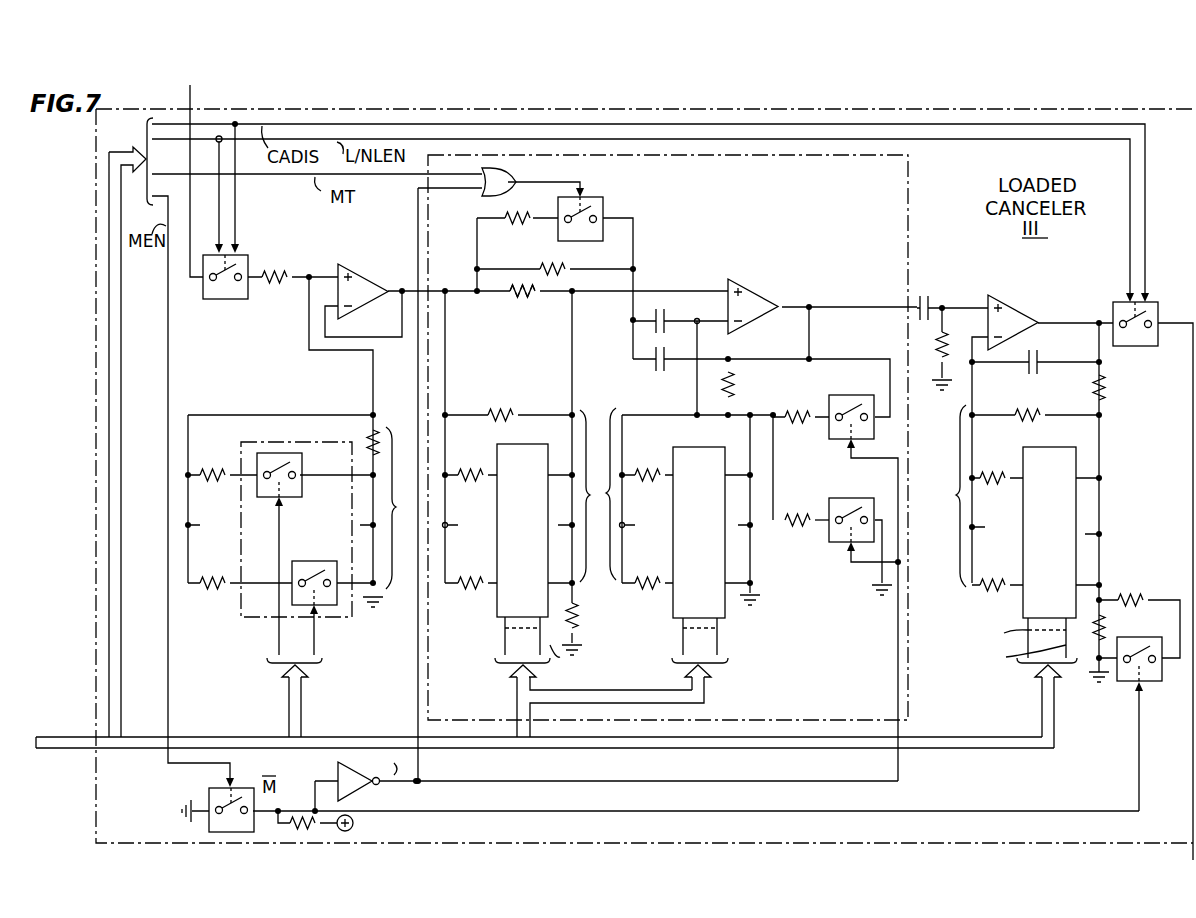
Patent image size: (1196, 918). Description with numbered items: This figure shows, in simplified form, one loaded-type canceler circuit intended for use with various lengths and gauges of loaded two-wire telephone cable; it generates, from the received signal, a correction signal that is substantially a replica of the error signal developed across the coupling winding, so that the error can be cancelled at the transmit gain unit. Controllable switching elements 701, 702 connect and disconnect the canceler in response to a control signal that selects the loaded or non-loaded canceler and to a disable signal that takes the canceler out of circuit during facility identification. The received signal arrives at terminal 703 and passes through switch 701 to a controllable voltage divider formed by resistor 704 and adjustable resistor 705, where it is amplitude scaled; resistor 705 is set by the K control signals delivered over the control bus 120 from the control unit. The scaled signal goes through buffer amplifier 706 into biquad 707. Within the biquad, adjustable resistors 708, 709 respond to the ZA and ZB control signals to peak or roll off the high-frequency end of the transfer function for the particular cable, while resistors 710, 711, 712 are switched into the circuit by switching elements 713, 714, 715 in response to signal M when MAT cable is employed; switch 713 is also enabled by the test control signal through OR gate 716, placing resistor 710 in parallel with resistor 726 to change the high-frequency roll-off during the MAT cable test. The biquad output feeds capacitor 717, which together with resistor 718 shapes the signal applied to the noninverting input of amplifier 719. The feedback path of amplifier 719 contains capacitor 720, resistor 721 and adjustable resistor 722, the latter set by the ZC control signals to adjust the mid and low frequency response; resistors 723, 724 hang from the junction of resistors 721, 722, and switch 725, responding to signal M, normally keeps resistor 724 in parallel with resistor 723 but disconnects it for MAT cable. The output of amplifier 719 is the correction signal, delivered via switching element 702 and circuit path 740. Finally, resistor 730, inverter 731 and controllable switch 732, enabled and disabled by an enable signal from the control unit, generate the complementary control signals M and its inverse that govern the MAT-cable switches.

The control bus 120 is at (58, 735).
The controllable switching element 701 is at (226, 300).
The controllable switching element 702 is at (1150, 304).
The terminal 703 is at (192, 98).
The resistor 704 is at (281, 270).
The controllably adjustable resistor 705 is at (397, 475).
The buffer amplifier 706 is at (368, 267).
The biquad 707 is at (908, 180).
The adjustable resistor ZA 708 is at (577, 457).
The adjustable resistor ZB 709 is at (603, 527).
The resistor 710 is at (525, 228).
The resistor 711 is at (800, 512).
The resistor 712 is at (802, 426).
The switching element 713 is at (604, 204).
The switching element 714 is at (836, 543).
The switching element 715 is at (848, 395).
The OR gate 716 is at (505, 172).
The capacitor 717 is at (922, 292).
The resistor 718 is at (930, 345).
The amplifier 719 is at (1012, 300).
The capacitor 720 is at (1036, 350).
The resistor 721 is at (1106, 390).
The adjustable resistor ZC 722 is at (958, 496).
The resistor 723 is at (1106, 628).
The resistor 724 is at (1135, 592).
The switch 725 is at (1118, 684).
The resistor 726 is at (560, 262).
The resistor 730 is at (300, 805).
The inverter 731 is at (355, 793).
The controllable switch 732 is at (208, 798).
The circuit path 740 is at (1192, 710).